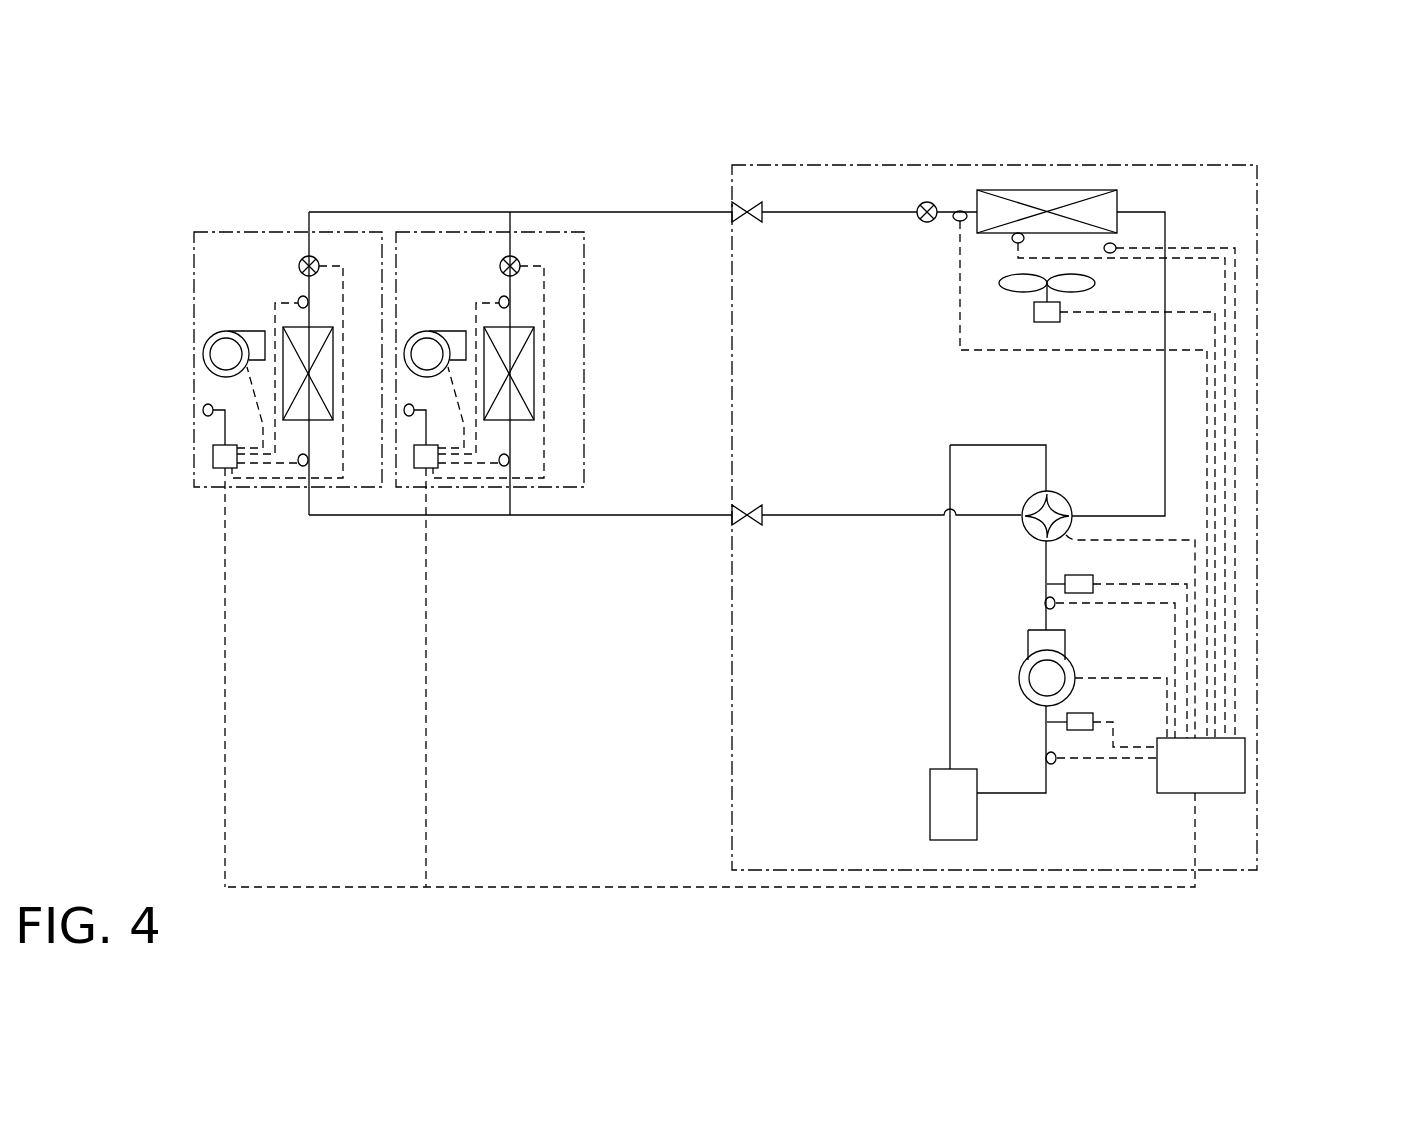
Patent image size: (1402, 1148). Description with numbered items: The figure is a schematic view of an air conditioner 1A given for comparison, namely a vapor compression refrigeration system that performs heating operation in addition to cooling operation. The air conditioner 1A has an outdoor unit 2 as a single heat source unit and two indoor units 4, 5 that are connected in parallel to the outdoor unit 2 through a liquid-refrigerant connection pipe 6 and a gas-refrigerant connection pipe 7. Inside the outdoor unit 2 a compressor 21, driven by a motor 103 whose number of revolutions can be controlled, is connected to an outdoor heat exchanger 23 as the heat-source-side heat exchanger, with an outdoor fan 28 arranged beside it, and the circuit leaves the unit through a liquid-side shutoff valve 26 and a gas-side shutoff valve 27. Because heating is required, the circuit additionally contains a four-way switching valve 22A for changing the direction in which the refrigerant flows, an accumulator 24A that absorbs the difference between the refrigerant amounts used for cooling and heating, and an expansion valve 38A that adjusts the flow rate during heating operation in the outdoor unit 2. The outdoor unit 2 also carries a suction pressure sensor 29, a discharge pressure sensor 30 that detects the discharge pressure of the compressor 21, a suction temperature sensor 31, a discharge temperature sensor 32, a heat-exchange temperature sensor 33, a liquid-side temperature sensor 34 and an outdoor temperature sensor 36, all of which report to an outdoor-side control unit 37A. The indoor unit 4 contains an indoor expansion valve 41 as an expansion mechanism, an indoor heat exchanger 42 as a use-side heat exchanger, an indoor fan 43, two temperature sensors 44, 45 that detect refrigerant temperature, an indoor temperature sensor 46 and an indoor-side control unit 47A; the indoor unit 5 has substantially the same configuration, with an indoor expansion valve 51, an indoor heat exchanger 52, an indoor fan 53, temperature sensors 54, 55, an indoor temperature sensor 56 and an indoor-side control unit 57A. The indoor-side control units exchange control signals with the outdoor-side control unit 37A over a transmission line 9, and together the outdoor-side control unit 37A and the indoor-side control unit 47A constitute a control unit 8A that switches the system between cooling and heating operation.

The air conditioner 1A is at (1307, 110).
The outdoor unit 2 is at (1213, 165).
The indoor unit 4 is at (372, 232).
The indoor unit 5 is at (577, 232).
The liquid-refrigerant connection pipe 6 is at (645, 211).
The gas-refrigerant connection pipe 7 is at (630, 518).
The control unit 8A is at (595, 852).
The transmission line 9 is at (502, 887).
The compressor 21 is at (1015, 638).
The four-way switching valve 22A is at (1030, 500).
The outdoor heat exchanger 23 is at (1065, 190).
The accumulator 24A is at (967, 769).
The liquid-side shutoff valve 26 is at (757, 202).
The gas-side shutoff valve 27 is at (750, 525).
The outdoor fan 28 is at (987, 297).
The suction pressure sensor 29 is at (1082, 712).
The discharge pressure sensor 30 is at (1090, 578).
The suction temperature sensor 31 is at (1056, 764).
The discharge temperature sensor 32 is at (1056, 606).
The heat-exchange temperature sensor 33 is at (1012, 242).
The liquid-side temperature sensor 34 is at (953, 221).
The outdoor temperature sensor 36 is at (1116, 248).
The outdoor-side control unit 37A is at (1213, 793).
The expansion valve 38A is at (921, 204).
The indoor expansion valve 41 is at (320, 263).
The indoor heat exchanger 42 is at (327, 327).
The indoor fan 43 is at (233, 320).
The temperature sensor 44 is at (301, 296).
The temperature sensor 45 is at (300, 468).
The indoor temperature sensor 46 is at (204, 416).
The indoor-side control unit 47A is at (220, 468).
The indoor expansion valve 51 is at (521, 263).
The indoor heat exchanger 52 is at (528, 327).
The indoor fan 53 is at (437, 320).
The temperature sensor 54 is at (502, 296).
The temperature sensor 55 is at (501, 468).
The indoor temperature sensor 56 is at (406, 416).
The indoor-side control unit 57A is at (421, 468).
The motor 103 is at (1030, 685).